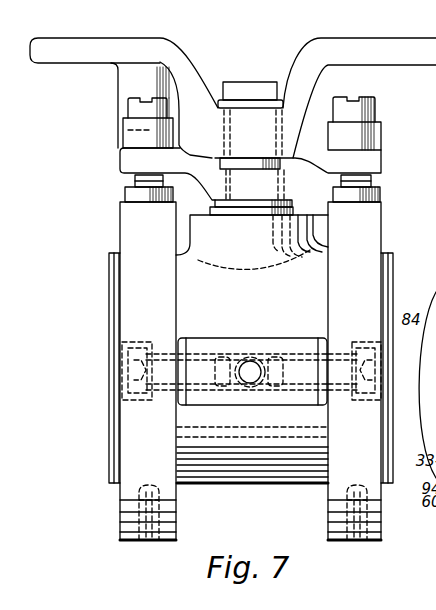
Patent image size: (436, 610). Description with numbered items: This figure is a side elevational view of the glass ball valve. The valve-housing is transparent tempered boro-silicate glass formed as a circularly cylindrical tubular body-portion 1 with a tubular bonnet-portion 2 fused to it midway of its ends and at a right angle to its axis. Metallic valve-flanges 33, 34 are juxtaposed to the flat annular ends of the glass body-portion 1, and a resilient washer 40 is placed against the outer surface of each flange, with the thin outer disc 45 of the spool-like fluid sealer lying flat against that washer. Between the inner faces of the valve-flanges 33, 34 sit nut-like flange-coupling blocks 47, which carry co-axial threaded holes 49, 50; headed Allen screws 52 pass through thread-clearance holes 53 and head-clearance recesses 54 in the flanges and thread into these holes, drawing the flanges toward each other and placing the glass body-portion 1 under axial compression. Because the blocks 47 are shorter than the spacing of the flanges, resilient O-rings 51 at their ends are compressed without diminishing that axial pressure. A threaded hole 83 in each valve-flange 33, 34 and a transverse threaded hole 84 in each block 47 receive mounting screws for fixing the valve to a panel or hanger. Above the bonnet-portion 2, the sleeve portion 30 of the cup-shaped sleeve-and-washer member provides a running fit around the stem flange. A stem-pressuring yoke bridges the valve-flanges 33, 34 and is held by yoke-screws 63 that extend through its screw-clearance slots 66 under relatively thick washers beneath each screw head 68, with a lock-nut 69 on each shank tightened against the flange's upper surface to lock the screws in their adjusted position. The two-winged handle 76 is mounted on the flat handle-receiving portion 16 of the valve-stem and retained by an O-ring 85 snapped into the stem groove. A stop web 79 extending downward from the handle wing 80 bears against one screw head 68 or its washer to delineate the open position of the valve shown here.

The body-portion 1 is at (241, 474).
The bonnet-portion 2 is at (203, 239).
The handle-receiving portion 16 is at (238, 85).
The sleeve portion 30 is at (297, 207).
The valve-flange 33 is at (172, 522).
The valve-flange 34 is at (328, 500).
The resilient washer 40 is at (383, 253).
The outer disc 45 is at (394, 273).
The flange-coupling block 47 is at (275, 347).
The threaded hole 49 is at (206, 389).
The threaded hole 50 is at (306, 390).
The O-ring 51 is at (182, 343).
The headed Allen screw 52 is at (118, 394).
The thread-clearance hole 53 is at (333, 392).
The head-clearance recess 54 is at (140, 340).
The yoke-screw 63 is at (134, 181).
The screw-clearance slot 66 is at (133, 137).
The screw head 68 is at (376, 114).
The lock-nut 69 is at (127, 189).
The two-winged handle 76 is at (191, 131).
The stop web 79 is at (128, 80).
The wing 80 is at (57, 46).
The threaded hole 83 is at (153, 540).
The transverse threaded hole 84 is at (250, 360).
The O-ring 85 is at (279, 106).